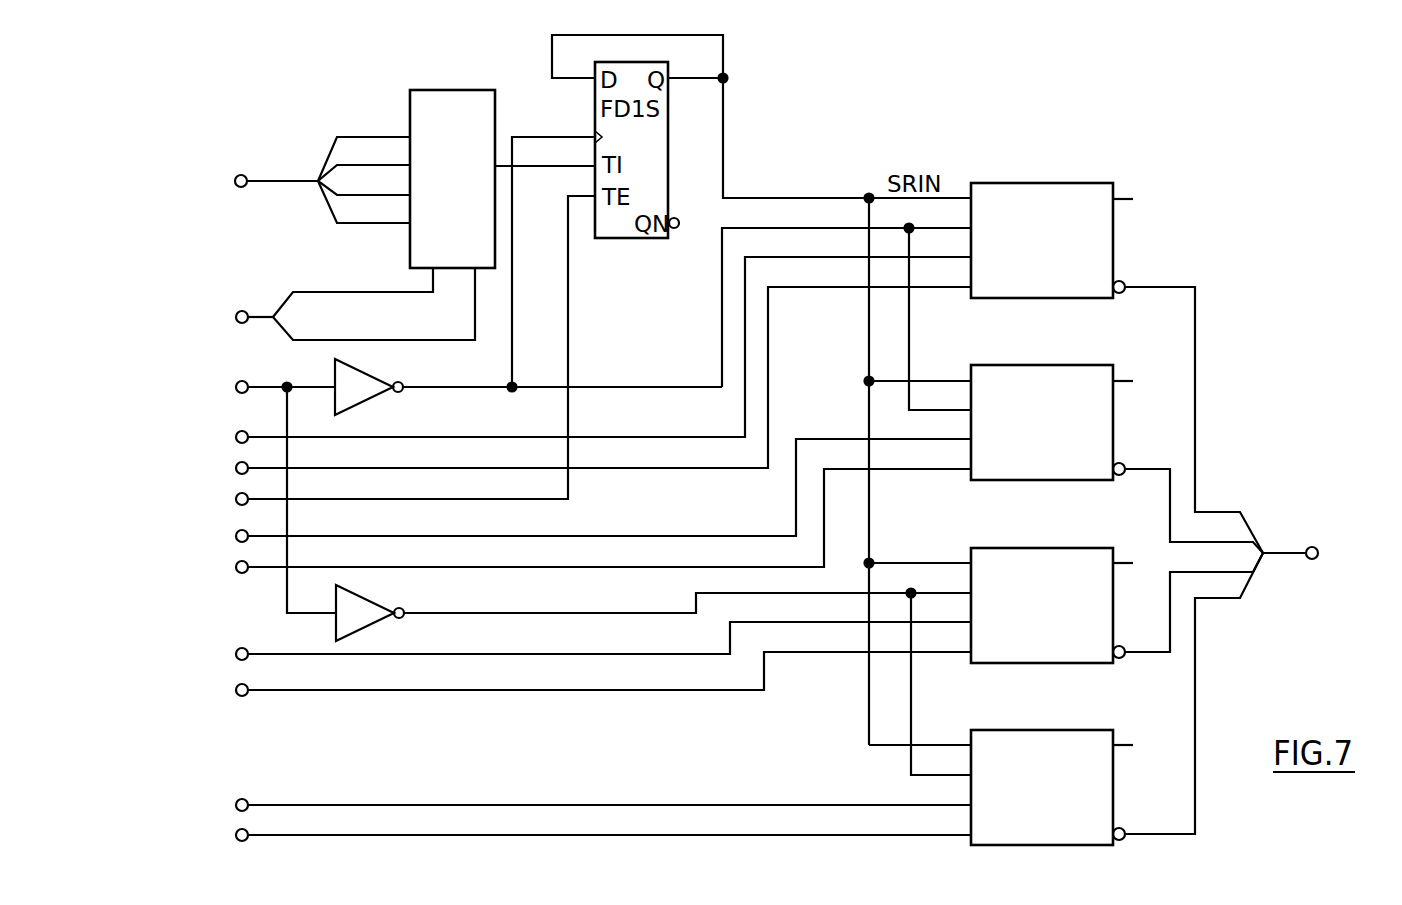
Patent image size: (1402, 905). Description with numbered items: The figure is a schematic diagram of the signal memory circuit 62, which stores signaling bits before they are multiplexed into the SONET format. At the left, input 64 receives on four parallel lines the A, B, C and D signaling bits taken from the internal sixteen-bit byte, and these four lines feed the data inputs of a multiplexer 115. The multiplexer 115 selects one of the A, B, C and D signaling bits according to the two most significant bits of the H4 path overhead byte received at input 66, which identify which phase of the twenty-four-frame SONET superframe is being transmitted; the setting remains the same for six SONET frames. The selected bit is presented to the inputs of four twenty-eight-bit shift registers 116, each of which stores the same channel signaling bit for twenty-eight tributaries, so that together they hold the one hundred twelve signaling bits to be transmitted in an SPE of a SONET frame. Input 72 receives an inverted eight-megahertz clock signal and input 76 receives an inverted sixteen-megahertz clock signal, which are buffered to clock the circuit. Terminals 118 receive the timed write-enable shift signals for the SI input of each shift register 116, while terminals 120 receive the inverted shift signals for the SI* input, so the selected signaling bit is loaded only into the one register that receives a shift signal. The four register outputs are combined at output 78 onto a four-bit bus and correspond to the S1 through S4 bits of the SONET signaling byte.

The multiplexer 115 is at (462, 90).
The input 64 is at (247, 173).
The input 66 is at (246, 306).
The input 76 is at (246, 377).
The terminals 118 is at (248, 441).
The terminals 120 is at (248, 472).
The input 72 is at (248, 503).
The 28-bit shift registers 116 is at (1032, 183).
The signal memory circuit 62 is at (1114, 495).
The output 78 is at (1263, 550).